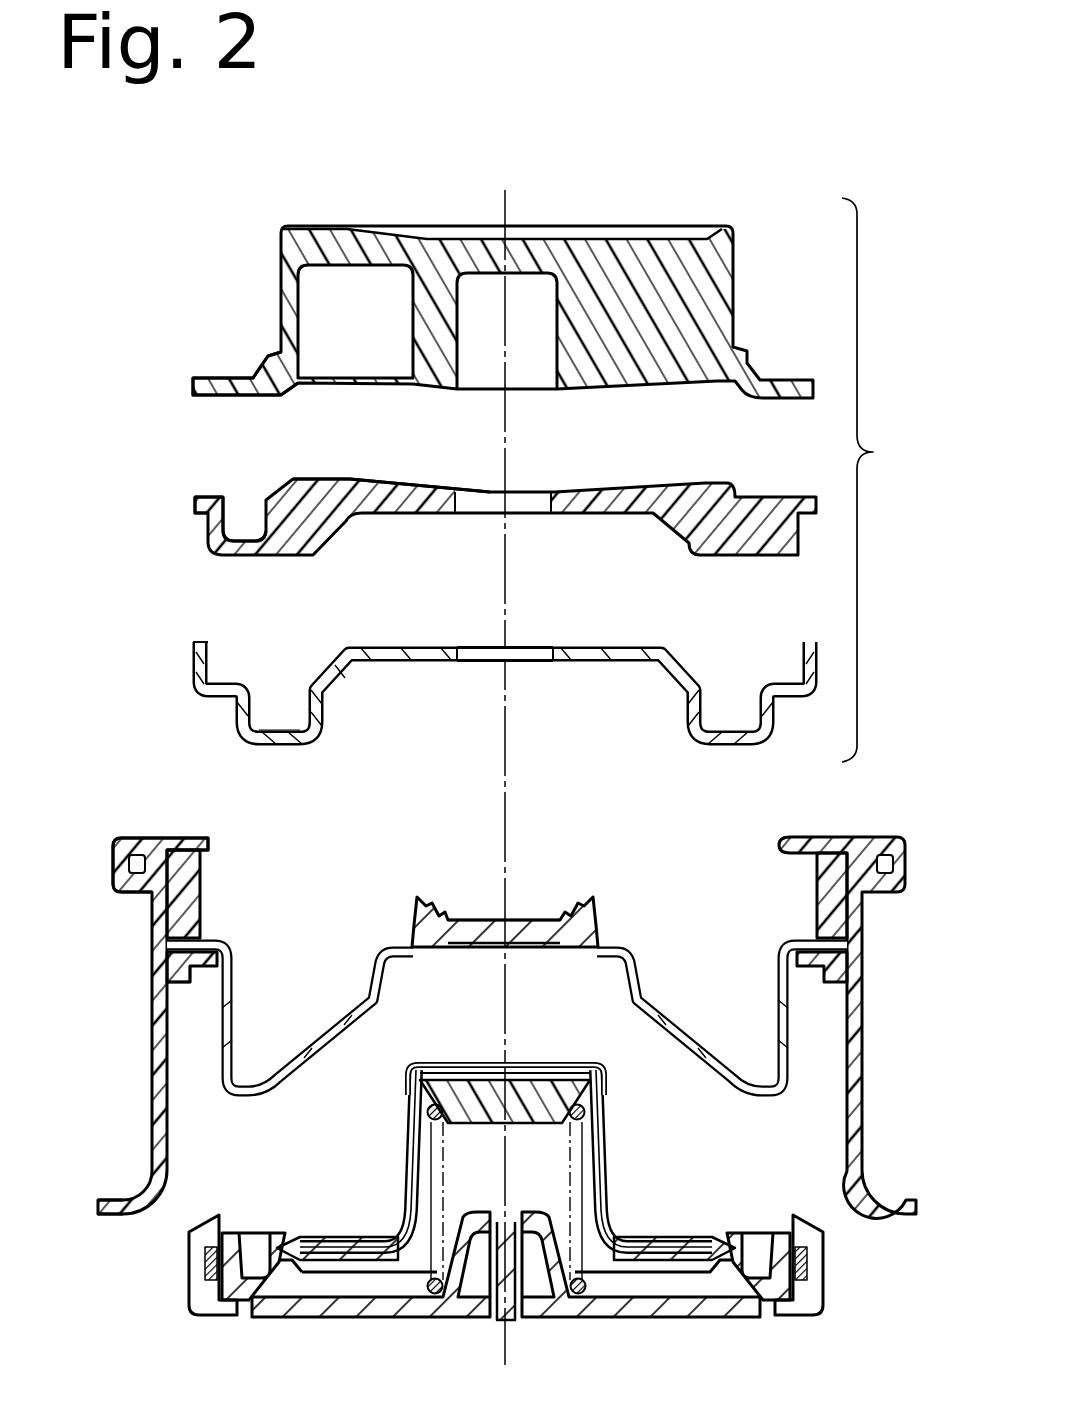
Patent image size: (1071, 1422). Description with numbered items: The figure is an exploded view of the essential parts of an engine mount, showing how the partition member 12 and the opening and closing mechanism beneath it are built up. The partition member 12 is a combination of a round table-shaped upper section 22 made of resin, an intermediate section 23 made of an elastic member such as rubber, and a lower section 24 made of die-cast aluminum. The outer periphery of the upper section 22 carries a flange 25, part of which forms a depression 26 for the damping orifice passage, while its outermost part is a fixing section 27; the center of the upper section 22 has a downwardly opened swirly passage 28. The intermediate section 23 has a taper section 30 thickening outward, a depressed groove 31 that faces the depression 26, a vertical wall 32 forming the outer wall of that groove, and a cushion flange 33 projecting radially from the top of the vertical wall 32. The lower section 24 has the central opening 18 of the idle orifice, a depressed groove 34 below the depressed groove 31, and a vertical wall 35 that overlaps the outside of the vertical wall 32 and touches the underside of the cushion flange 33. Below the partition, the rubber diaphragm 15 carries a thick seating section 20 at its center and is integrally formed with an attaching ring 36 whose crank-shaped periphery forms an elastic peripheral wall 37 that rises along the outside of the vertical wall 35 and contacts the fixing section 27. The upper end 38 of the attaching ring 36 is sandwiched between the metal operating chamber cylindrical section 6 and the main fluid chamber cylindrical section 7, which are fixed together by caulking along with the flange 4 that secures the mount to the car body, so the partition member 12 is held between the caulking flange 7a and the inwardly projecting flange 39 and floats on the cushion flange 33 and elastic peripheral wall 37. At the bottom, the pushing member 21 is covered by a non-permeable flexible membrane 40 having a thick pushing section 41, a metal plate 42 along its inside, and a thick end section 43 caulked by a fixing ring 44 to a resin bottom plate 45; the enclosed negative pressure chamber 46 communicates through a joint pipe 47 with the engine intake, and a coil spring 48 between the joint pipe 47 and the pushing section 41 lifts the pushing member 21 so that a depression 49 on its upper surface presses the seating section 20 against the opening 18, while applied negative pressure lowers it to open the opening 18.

The flange 4 is at (110, 1199).
The operating chamber cylindrical section 6 is at (175, 1000).
The main fluid chamber cylindrical section 7 is at (780, 837).
The caulking flange 7a is at (180, 838).
The partition member 12 is at (873, 452).
The diaphragm 15 is at (507, 987).
The opening 18 is at (483, 663).
The seating section 20 is at (566, 912).
The pushing member 21 is at (506, 1152).
The upper section 22 is at (489, 288).
The intermediate section 23 is at (479, 494).
The lower section 24 is at (474, 669).
The flange 25 is at (244, 378).
The depression 26 is at (270, 396).
The fixing section 27 is at (200, 378).
The swirly passage 28 is at (410, 303).
The taper section 30 is at (348, 490).
The depressed groove 31 is at (243, 538).
The vertical wall 32 is at (207, 521).
The cushion flange 33 is at (197, 497).
The depressed groove 34 is at (270, 730).
The vertical wall 35 is at (194, 655).
The attaching ring 36 is at (203, 880).
The elastic peripheral wall 37 is at (207, 912).
The upper end 38 is at (138, 838).
The inwardly projecting flange 39 is at (190, 983).
The flexible membrane 40 is at (407, 1172).
The pushing section 41 is at (505, 1072).
The metal plate 42 is at (418, 1132).
The thick end section 43 is at (352, 1238).
The fixing ring 44 is at (190, 1287).
The bottom plate 45 is at (477, 1287).
The negative pressure chamber 46 is at (530, 1185).
The joint pipe 47 is at (498, 1305).
The coil spring 48 is at (445, 1200).
The depression 49 is at (530, 1072).